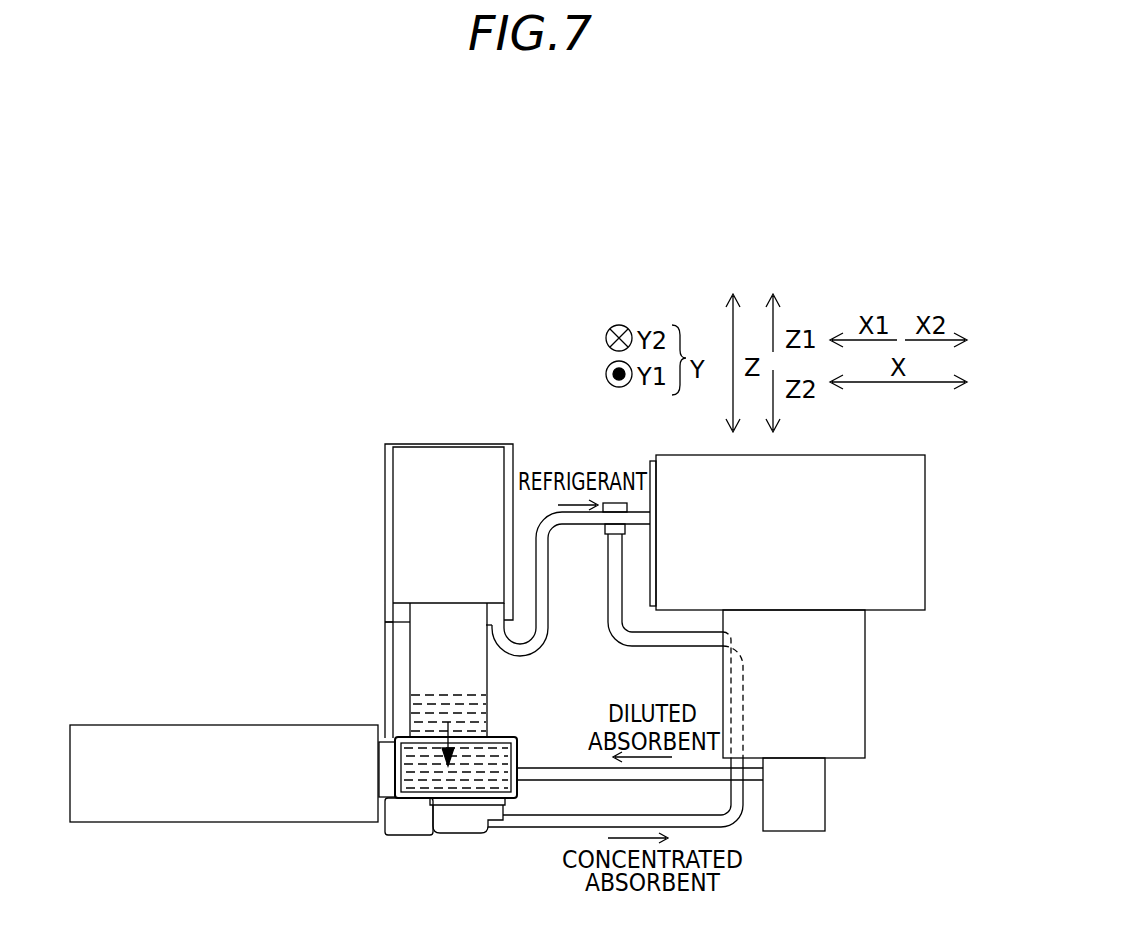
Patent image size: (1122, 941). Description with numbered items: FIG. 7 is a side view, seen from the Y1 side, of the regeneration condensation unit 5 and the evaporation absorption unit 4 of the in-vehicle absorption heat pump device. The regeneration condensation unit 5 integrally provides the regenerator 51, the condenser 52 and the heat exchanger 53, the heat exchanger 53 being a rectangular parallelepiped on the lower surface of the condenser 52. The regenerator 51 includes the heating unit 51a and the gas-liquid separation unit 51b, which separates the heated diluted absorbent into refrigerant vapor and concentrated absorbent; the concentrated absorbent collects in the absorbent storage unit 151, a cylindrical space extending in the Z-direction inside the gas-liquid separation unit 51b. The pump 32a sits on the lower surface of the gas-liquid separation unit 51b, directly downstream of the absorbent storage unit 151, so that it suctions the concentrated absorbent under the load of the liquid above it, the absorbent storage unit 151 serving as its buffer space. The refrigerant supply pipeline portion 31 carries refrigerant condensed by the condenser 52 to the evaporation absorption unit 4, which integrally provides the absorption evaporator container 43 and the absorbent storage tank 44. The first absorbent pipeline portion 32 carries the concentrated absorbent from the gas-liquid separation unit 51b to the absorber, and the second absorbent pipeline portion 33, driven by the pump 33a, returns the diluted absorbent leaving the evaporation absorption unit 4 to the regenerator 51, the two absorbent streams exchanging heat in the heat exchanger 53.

The evaporation absorption unit 4 is at (933, 450).
The absorption evaporator container 43 is at (925, 534).
The absorbent storage tank 44 is at (865, 686).
The regeneration condensation unit 5 is at (369, 444).
The regenerator 51 is at (351, 699).
The heating unit 51a is at (255, 725).
The gas-liquid separation unit 51b is at (503, 681).
The absorbent storage unit 151 is at (487, 708).
The condenser 52 is at (385, 538).
The heat exchanger 53 is at (385, 624).
The refrigerant supply pipeline portion 31 is at (548, 570).
The first absorbent pipeline portion 32 is at (670, 646).
The pump 32a is at (456, 835).
The second absorbent pipeline portion 33 is at (548, 768).
The pump 33a is at (795, 832).